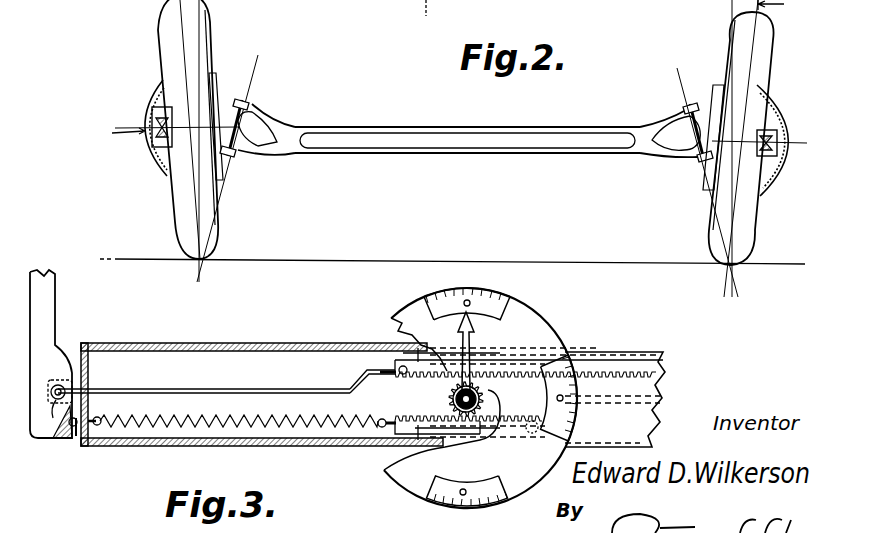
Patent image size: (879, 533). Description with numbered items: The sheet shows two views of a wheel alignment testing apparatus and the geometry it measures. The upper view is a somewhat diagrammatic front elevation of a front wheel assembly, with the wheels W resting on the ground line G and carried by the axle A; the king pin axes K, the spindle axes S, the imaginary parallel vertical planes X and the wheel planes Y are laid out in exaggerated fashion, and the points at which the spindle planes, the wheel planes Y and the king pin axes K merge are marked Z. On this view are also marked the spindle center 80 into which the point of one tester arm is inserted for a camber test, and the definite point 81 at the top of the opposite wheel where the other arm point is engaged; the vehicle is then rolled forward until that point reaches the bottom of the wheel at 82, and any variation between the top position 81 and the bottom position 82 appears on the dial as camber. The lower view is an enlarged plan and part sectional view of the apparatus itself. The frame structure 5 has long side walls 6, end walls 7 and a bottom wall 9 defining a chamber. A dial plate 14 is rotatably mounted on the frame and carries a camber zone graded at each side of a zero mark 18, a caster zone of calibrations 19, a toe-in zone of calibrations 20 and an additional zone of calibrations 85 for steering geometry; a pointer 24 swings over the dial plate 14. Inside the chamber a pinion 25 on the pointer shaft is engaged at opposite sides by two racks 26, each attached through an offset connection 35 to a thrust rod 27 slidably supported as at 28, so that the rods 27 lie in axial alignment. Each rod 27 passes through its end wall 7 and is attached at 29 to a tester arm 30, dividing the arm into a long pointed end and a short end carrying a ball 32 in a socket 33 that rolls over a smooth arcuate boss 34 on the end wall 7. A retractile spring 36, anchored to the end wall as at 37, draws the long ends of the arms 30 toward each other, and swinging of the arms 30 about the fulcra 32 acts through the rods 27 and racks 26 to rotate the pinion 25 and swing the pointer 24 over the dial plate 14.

In FIG. 2, the axle A is at (401, 124).
In FIG. 2, the king pin axes K is at (256, 103).
In FIG. 2, the wheels W is at (178, 215).
In FIG. 2, the spindle axes S is at (127, 136).
In FIG. 2, the merge points Z is at (213, 254).
In FIG. 2, the ground line G is at (339, 255).
In FIG. 2, the spindle center 80 is at (137, 128).
In FIG. 2, the top point of wheel 81 is at (782, 45).
In FIG. 2, the bottom point of wheel 82 is at (760, 250).
In FIG. 2, the zone of calibrations for caster 19 is at (372, 8).
In FIG. 3, the zone of calibrations for caster 19 is at (440, 483).
In FIG. 2, the frame structure 5 is at (431, 17).
In FIG. 3, the frame structure 5 is at (276, 343).
In FIG. 2, the imaginary parallel vertical planes X is at (690, 7).
In FIG. 2, the wheel planes Y is at (781, 10).
In FIG. 3, the tester arm 30 is at (53, 310).
In FIG. 3, the bottom wall 9 is at (262, 395).
In FIG. 3, the side walls 6 is at (305, 343).
In FIG. 3, the end wall 7 is at (104, 343).
In FIG. 3, the point of attachment 29 is at (56, 405).
In FIG. 3, the socket 33 is at (62, 440).
In FIG. 3, the ball 32 is at (73, 430).
In FIG. 3, the arcuate boss 34 is at (80, 440).
In FIG. 3, the retractile spring 36 is at (110, 418).
In FIG. 3, the thrust rod 27 is at (377, 385).
In FIG. 3, the offset connection 35 is at (350, 381).
In FIG. 3, the spring connection to end wall 37 is at (118, 447).
In FIG. 3, the rod support 28 is at (413, 352).
In FIG. 3, the rack 26 is at (420, 378).
In FIG. 3, the pinion 25 is at (458, 400).
In FIG. 3, the dial plate 14 is at (552, 330).
In FIG. 3, the zone of calibrations for toe-in 20 is at (490, 292).
In FIG. 3, the zero mark 18 is at (440, 494).
In FIG. 3, the zone of calibrations for steering geometry 85 is at (575, 368).
In FIG. 3, the pointer 24 is at (475, 340).